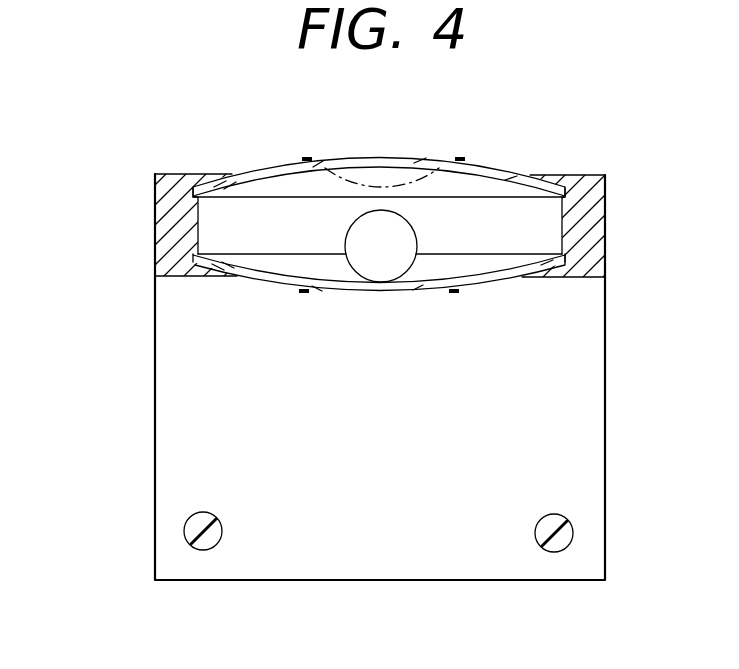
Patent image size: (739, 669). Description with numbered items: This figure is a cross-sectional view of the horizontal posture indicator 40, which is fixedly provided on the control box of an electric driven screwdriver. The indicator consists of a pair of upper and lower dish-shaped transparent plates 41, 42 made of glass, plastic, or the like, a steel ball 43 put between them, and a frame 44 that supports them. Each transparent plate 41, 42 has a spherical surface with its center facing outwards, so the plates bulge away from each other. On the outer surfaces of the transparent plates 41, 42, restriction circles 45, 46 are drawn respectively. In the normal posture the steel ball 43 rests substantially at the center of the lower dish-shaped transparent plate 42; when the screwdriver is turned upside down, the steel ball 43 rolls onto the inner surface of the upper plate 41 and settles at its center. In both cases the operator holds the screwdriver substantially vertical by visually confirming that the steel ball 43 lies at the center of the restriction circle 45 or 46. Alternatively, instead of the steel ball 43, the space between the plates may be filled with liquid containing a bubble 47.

The horizontal posture indicator 40 is at (128, 318).
The upper dish-shaped transparent plate 41 is at (495, 168).
The lower dish-shaped transparent plate 42 is at (482, 287).
The steel ball 43 is at (372, 272).
The frame 44 is at (155, 202).
The restriction circle 45 is at (304, 158).
The restriction circle 46 is at (300, 296).
The bubble 47 is at (395, 180).